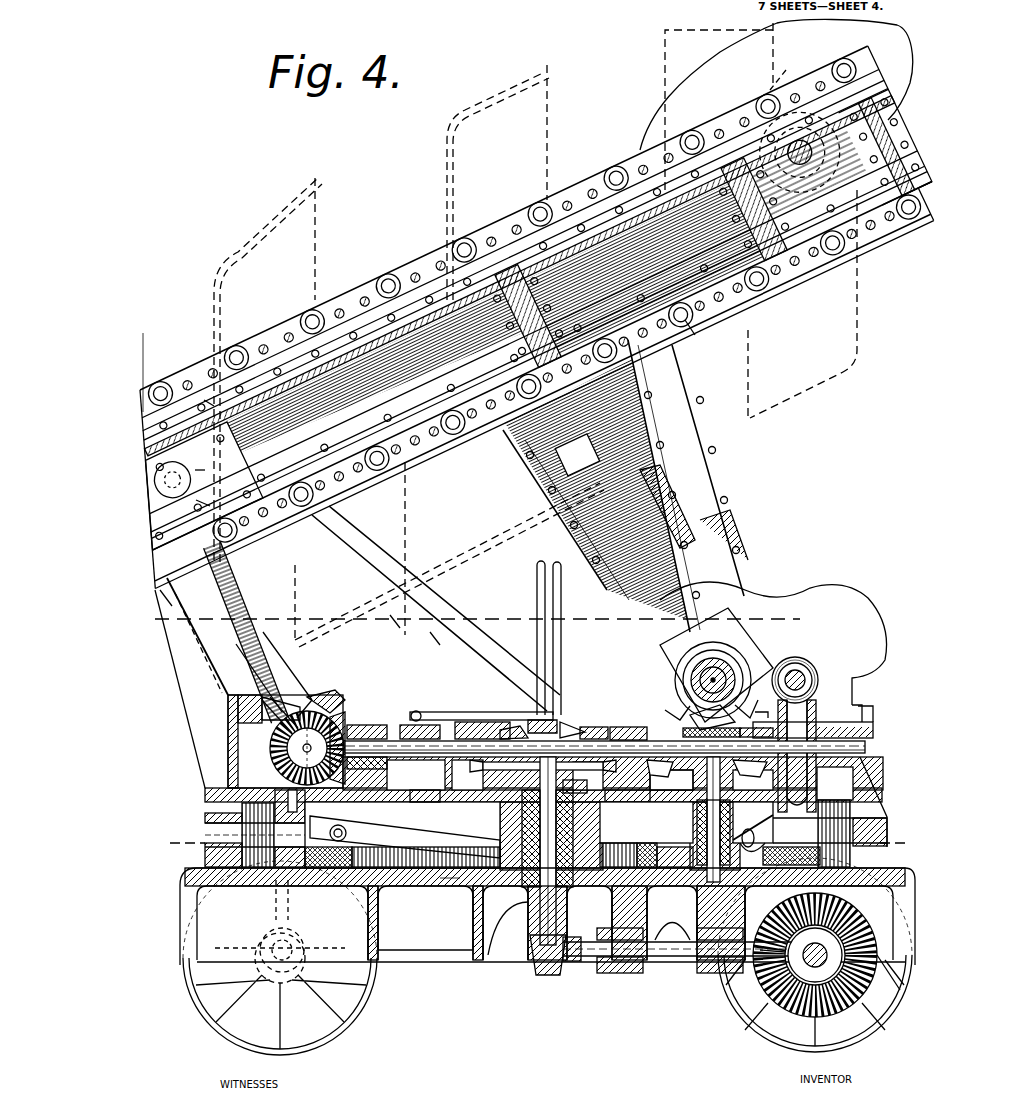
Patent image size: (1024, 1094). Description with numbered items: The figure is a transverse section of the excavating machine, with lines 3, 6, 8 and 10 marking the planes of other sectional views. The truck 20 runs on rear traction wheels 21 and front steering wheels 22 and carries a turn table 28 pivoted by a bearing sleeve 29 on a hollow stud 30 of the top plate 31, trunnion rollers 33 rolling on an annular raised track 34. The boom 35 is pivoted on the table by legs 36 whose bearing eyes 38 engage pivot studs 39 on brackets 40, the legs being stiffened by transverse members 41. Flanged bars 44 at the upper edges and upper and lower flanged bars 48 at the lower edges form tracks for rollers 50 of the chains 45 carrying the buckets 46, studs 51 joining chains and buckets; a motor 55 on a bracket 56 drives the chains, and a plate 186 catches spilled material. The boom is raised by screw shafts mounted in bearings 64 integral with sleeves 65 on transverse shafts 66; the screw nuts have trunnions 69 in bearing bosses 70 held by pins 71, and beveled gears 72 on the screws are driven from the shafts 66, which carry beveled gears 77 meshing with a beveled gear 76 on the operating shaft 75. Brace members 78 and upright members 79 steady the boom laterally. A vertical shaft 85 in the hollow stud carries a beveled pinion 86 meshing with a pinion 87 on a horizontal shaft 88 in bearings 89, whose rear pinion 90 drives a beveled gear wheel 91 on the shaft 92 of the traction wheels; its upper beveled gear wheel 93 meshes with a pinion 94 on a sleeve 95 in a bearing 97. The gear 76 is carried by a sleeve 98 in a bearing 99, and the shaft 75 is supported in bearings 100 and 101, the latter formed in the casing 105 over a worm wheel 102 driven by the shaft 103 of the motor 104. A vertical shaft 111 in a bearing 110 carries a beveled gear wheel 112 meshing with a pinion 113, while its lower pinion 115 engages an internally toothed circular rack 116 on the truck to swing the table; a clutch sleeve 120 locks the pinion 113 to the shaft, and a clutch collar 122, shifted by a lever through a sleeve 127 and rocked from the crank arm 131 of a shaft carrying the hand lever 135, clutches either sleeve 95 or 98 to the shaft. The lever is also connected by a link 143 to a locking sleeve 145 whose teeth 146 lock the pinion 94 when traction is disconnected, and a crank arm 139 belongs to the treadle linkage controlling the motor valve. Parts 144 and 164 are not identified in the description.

The section line 3— 3 is at (160, 608).
The section line 6— 6 is at (786, 70).
The section line 8— 8 is at (150, 338).
The section line 10— 10 is at (177, 832).
The truck 20 is at (190, 915).
The rear traction wheels 21 is at (760, 1025).
The front steering wheels 22 is at (355, 1000).
The turn table 28 is at (205, 795).
The bearing sleeve 29 is at (601, 827).
The hollow stud 30 is at (405, 841).
The top plate 31 is at (450, 882).
The trunnion rollers 33 is at (245, 836).
The annular raised track 34 is at (836, 885).
The boom 35 is at (401, 392).
The legs 36 is at (698, 432).
The bearing eyes 38 is at (735, 642).
The pivot studs 39 is at (736, 664).
The brackets 40 is at (856, 700).
The transverse stiffening members 41 is at (725, 494).
The flanged bars 44 is at (262, 372).
The chains 45 is at (893, 131).
The buckets 46 is at (316, 193).
The upper and lower flanged bars 48 is at (692, 330).
The rollers 50 is at (610, 175).
The studs 51 is at (528, 213).
The motor 55 is at (668, 100).
The bracket 56 is at (595, 489).
The bearings 64 is at (258, 677).
The sleeves 65 is at (245, 582).
The transverse shafts 66 is at (300, 755).
The trunnions 69 is at (178, 500).
The bearing bosses 70 is at (200, 482).
The pins 71 is at (200, 512).
The beveled gears 72 is at (240, 710).
The operating shaft 75 is at (866, 746).
The beveled gear 76 is at (340, 702).
The beveled gears 77 is at (270, 745).
The brace members 78 is at (458, 602).
The upright members 79 is at (185, 660).
The vertical shaft 85 is at (525, 890).
The beveled pinion 86 is at (545, 960).
The beveled pinion 87 is at (560, 980).
The horizontal shaft 88 is at (678, 957).
The bearings 89 is at (622, 975).
The beveled pinion 90 is at (775, 982).
The beveled gear wheel 91 is at (870, 965).
The shaft 92 is at (805, 962).
The beveled gear wheel 93 is at (472, 790).
The beveled pinion 94 is at (522, 700).
The sleeve 95 is at (470, 712).
The bearing 97 is at (440, 727).
The sleeve 98 is at (352, 725).
The bearing 99 is at (368, 726).
The bearing 100 is at (610, 728).
The bearing 101 is at (873, 728).
The worm wheel 102 is at (817, 716).
The motor shaft 103 is at (808, 672).
The motor 104 is at (783, 635).
The casing 105 is at (800, 660).
The vertical bearing 110 is at (707, 830).
The vertical shaft 111 is at (707, 810).
The beveled gear wheel 112 is at (760, 800).
The pinion 113 is at (655, 727).
The pinion 115 is at (682, 880).
The internally toothed circular rack 116 is at (412, 900).
The clutch sleeve 120 is at (728, 723).
The clutch collar 122 is at (352, 830).
The sleeve 127 is at (424, 792).
The crank arm 131 is at (719, 710).
The hand lever 135 is at (535, 562).
The crank arm 139 is at (690, 778).
The link 143 is at (455, 718).
The lug 144 is at (540, 720).
The locking sleeve 145 is at (592, 722).
The teeth or jaws 146 is at (575, 718).
The rod 164 is at (553, 592).
The plate 186 is at (208, 405).